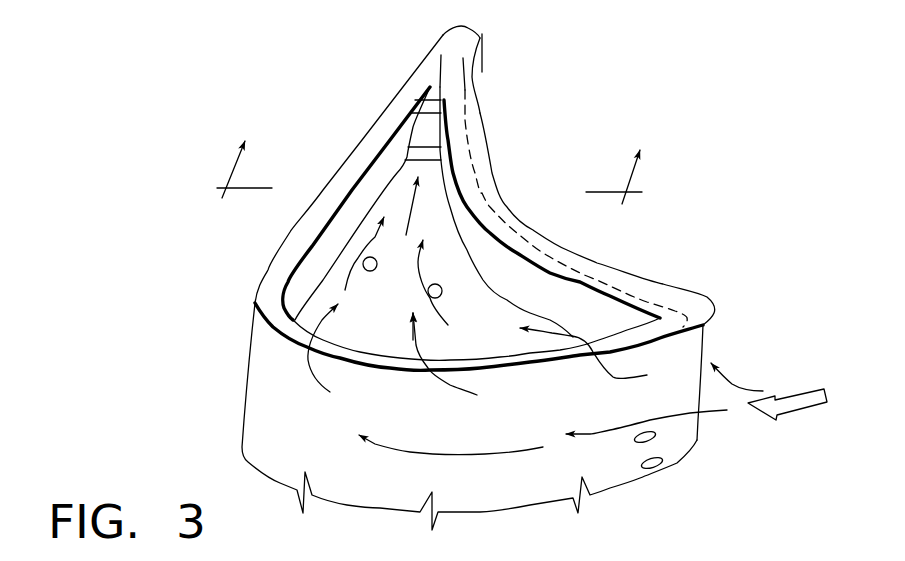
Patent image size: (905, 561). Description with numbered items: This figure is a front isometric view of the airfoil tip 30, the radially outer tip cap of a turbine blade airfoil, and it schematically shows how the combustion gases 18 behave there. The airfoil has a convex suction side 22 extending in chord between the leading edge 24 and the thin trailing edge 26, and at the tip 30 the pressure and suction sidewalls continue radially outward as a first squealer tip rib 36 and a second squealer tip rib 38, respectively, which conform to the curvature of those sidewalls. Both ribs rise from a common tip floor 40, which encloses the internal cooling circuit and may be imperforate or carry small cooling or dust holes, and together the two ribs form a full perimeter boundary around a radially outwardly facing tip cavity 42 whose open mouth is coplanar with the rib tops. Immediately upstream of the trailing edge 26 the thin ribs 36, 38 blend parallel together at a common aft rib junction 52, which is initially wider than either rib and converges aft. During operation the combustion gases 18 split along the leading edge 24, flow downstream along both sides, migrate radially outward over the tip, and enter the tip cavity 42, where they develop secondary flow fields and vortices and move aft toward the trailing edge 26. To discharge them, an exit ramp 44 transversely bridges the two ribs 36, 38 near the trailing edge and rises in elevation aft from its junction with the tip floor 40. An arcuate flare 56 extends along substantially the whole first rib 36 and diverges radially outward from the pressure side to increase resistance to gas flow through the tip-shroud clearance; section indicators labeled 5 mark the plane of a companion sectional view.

The section line 5- 5 is at (429, 156).
The combustion gases 18 is at (803, 398).
The suction side 22 is at (275, 433).
The leading edge 24 is at (697, 417).
The trailing edge 26 is at (485, 65).
The airfoil tip 30 is at (631, 244).
The first squealer tip rib 36 is at (457, 153).
The second squealer tip rib 38 is at (373, 137).
The tip floor 40 is at (448, 325).
The tip cavity 42 is at (313, 263).
The exit ramp 44 is at (417, 130).
The aft rib junction 52 is at (440, 53).
The arcuate flare 56 is at (722, 320).